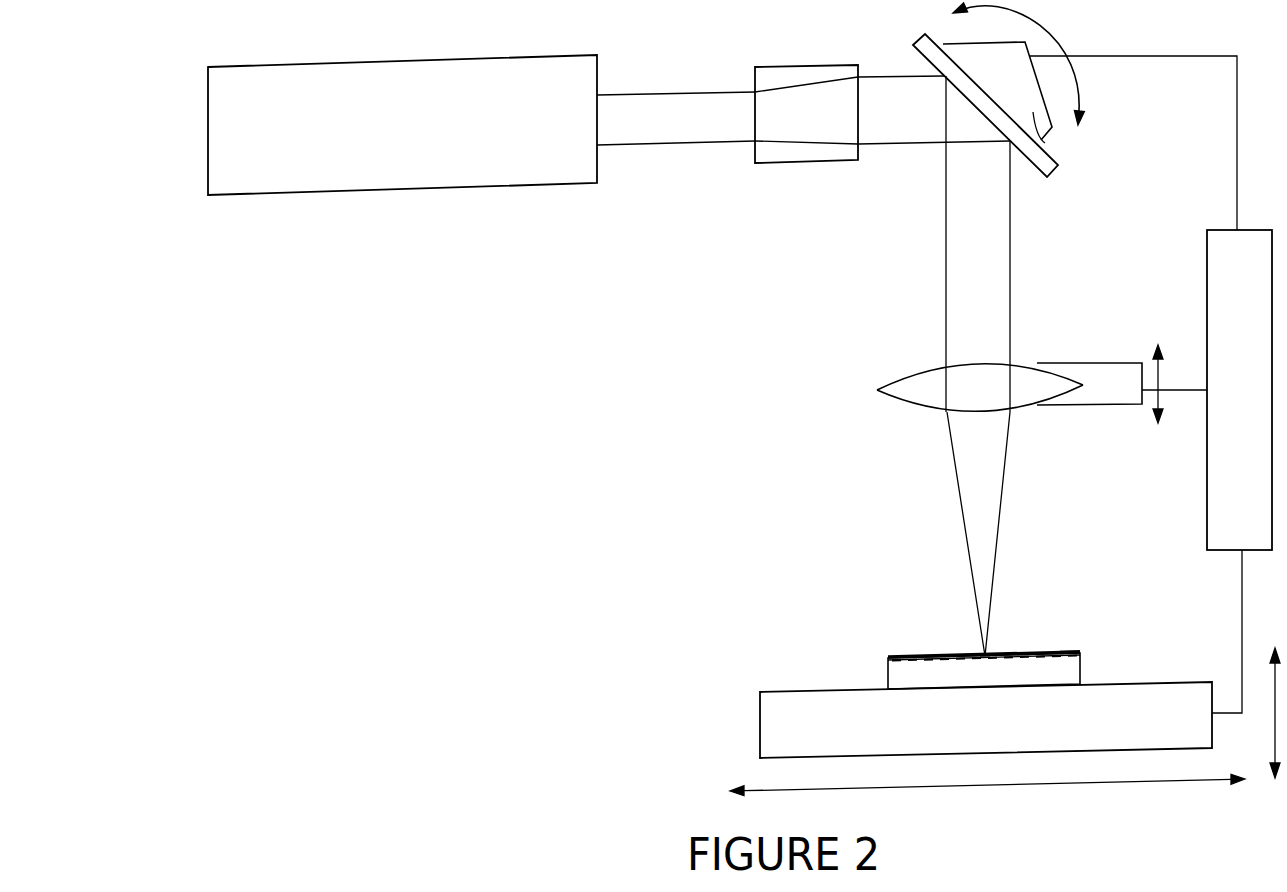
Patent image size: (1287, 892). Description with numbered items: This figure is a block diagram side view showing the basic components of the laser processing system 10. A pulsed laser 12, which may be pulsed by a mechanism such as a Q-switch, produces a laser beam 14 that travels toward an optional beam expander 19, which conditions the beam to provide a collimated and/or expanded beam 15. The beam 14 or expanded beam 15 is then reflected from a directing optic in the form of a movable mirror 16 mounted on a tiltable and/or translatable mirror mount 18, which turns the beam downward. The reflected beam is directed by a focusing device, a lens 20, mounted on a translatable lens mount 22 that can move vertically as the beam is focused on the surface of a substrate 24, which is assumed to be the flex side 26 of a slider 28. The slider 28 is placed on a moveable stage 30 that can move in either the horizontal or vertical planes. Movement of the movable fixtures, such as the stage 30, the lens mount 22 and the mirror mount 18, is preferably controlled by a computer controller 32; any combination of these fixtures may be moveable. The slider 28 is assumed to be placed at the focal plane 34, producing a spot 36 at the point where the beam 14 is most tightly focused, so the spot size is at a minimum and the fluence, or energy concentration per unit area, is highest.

The laser processing system 10 is at (472, 347).
The pulsed laser 12 is at (512, 168).
The laser beam 14 is at (685, 143).
The expanded beam 15 is at (927, 140).
The movable mirror 16 is at (1055, 162).
The mirror mount 18 is at (1057, 163).
The beam expander 19 is at (822, 153).
The lens 20 is at (925, 397).
The lens mount 22 is at (1127, 392).
The substrate 24 is at (893, 675).
The flex side 26 is at (902, 653).
The slider 28 is at (1007, 685).
The moveable stage 30 is at (760, 710).
The computer controller 32 is at (1227, 405).
The focal plane 34 is at (1092, 652).
The spot 36 is at (982, 653).